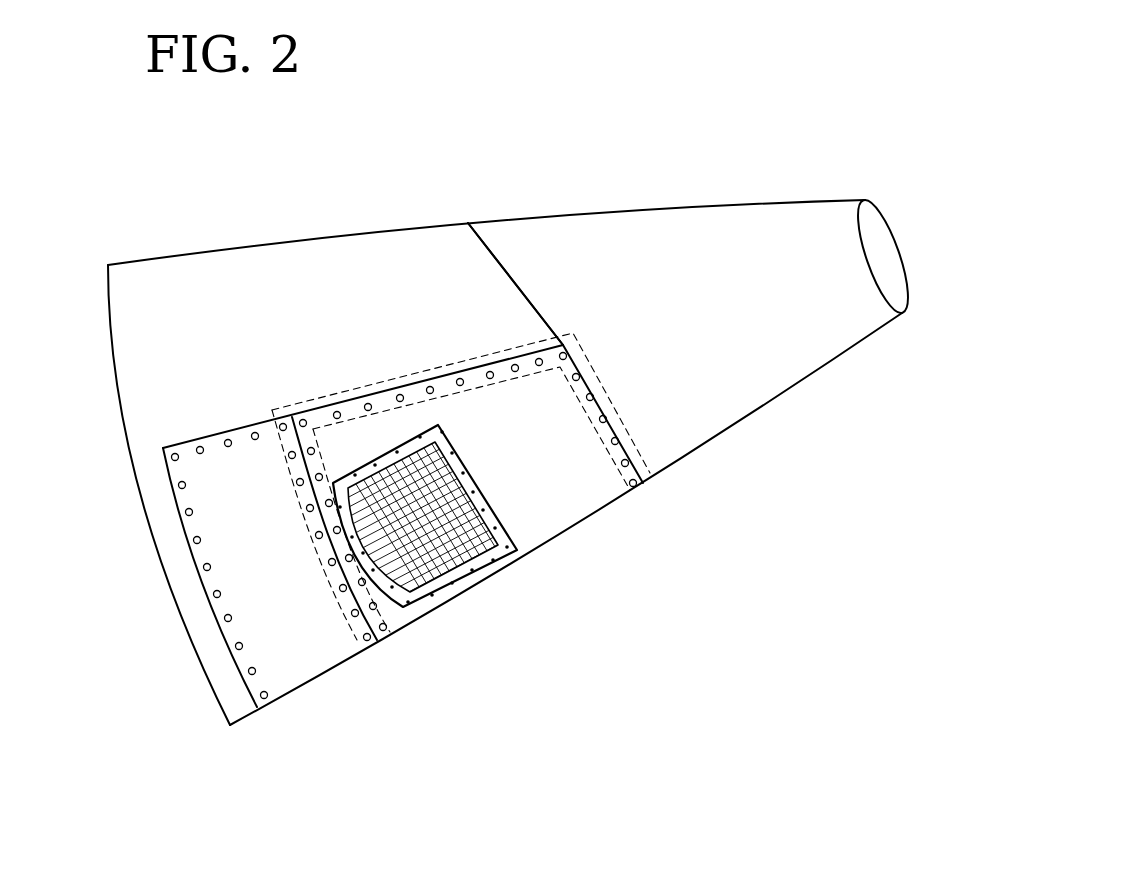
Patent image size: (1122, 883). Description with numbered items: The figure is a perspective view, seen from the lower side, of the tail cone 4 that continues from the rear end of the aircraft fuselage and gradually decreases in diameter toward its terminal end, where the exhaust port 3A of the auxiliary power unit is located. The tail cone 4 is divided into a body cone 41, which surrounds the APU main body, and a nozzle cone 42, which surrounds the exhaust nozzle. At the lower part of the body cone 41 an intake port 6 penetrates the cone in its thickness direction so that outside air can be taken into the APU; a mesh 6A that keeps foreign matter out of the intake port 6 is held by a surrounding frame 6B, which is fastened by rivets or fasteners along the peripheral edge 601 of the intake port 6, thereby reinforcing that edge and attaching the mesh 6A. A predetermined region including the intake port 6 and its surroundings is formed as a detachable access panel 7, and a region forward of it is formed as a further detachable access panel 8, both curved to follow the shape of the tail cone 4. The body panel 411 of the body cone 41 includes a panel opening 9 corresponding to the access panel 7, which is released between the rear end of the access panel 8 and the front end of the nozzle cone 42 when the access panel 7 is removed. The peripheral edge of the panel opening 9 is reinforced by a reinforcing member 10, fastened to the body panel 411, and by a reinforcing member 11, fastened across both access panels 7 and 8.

The tail cone 4 is at (428, 104).
The body cone 41 is at (398, 227).
The nozzle cone 42 is at (556, 213).
The body panel 411 is at (145, 339).
The exhaust port 3A is at (903, 272).
The panel opening 9 is at (402, 400).
The reinforcing member 10 is at (611, 402).
The reinforcing member 11 is at (300, 522).
The access panel 7 is at (590, 495).
The access panel 8 is at (288, 672).
The intake port 6 is at (441, 544).
The peripheral edge 601 is at (455, 461).
The mesh 6A is at (478, 507).
The frame 6B is at (517, 535).